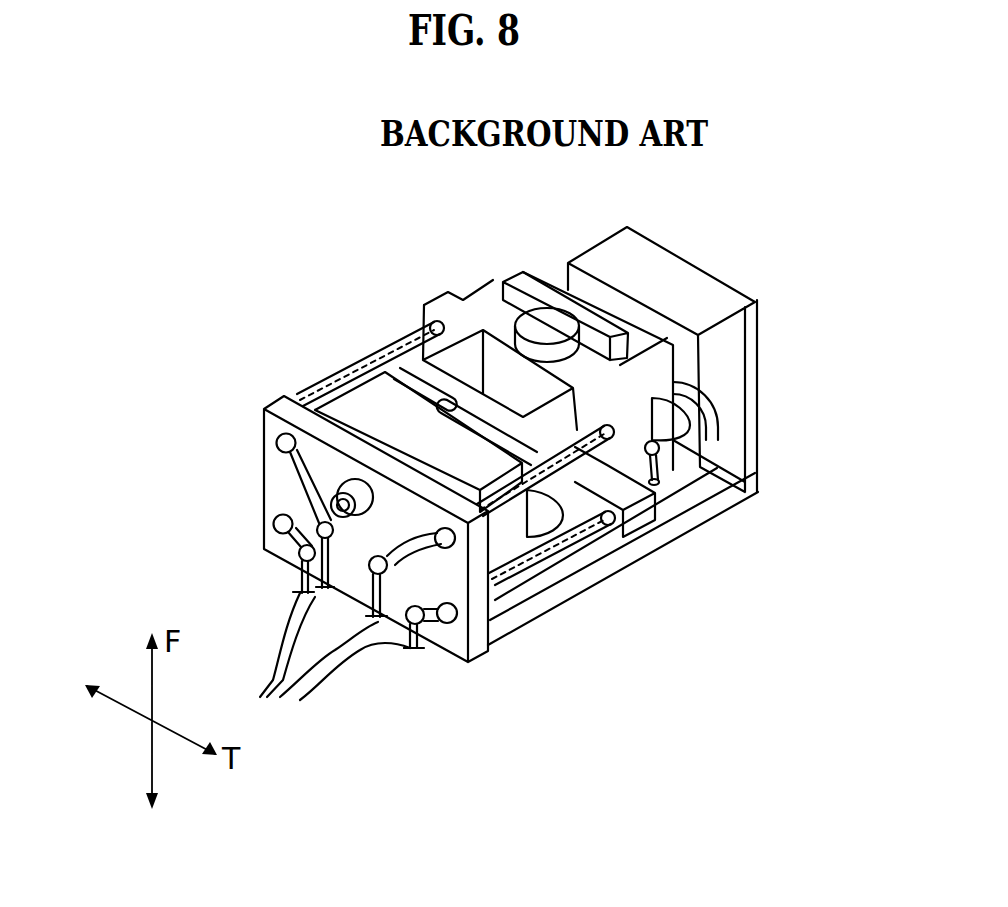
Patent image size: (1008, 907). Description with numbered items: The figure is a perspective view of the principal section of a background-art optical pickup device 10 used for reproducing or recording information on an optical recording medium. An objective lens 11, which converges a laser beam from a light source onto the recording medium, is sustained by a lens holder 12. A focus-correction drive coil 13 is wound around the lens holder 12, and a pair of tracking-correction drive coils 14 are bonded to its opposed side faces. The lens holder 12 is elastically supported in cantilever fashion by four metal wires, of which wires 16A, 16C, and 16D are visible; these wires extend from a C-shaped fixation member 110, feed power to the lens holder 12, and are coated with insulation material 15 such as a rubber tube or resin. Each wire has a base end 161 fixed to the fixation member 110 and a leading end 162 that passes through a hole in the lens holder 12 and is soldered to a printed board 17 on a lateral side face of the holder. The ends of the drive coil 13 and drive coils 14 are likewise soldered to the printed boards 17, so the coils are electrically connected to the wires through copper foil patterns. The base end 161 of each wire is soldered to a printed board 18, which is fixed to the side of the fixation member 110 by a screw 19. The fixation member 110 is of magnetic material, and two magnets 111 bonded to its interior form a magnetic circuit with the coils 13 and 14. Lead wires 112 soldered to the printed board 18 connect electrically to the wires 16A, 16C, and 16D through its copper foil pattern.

The optical pickup device 10 is at (775, 237).
The objective lens 11 is at (533, 325).
The lens holder 12 is at (430, 298).
The focus-correction drive coil 13 is at (668, 470).
The tracking-correction drive coils 14 is at (717, 415).
The insulation material 15 is at (538, 497).
The metal wire 16A is at (348, 362).
The metal wire 16C is at (662, 490).
The metal wire 16D is at (630, 595).
The printed board 17 is at (673, 470).
The printed board 18 is at (458, 642).
The screw 19 is at (263, 411).
The fixation member 110 is at (515, 595).
The magnets 111 is at (600, 242).
The lead wires 112 is at (262, 697).
The base end 161 is at (303, 394).
The leading end 162 is at (422, 325).